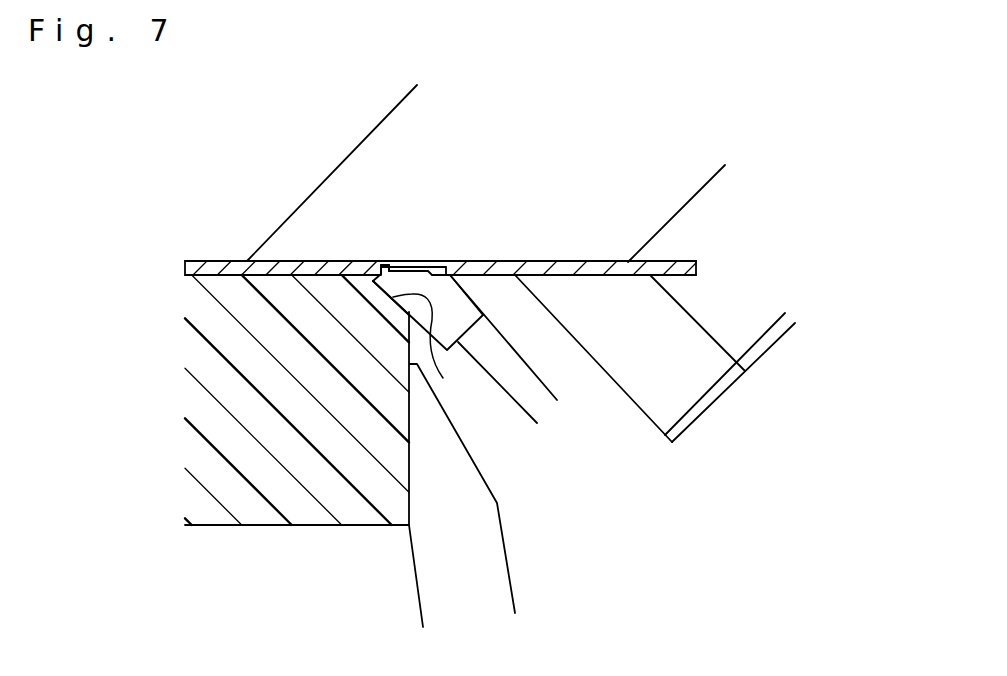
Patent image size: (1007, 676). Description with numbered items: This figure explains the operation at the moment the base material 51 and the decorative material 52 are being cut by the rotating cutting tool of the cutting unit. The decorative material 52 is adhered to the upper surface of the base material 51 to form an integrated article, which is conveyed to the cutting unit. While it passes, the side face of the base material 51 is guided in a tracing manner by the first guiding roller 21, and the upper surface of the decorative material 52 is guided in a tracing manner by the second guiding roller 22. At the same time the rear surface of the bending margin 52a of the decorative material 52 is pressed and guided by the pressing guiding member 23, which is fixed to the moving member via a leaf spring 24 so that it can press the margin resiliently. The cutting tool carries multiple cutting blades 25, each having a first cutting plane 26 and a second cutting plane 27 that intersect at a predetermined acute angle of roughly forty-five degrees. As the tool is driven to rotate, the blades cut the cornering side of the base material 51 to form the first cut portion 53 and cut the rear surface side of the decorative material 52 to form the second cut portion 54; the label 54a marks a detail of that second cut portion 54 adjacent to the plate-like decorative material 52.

The first guiding roller 21 is at (503, 527).
The second guiding roller 22 is at (693, 199).
The pressing guiding member 23 is at (630, 402).
The leaf spring 24 is at (778, 340).
The cutting blade 25 is at (470, 294).
The first cutting plane 26 is at (383, 292).
The second cutting plane 27 is at (410, 265).
The base material 51 is at (265, 512).
The decorative material 52 is at (218, 268).
The bending margin 52a is at (678, 262).
The first cut portion 53 is at (443, 378).
The second cut portion 54 is at (452, 261).
The tab of holder 54a is at (382, 264).